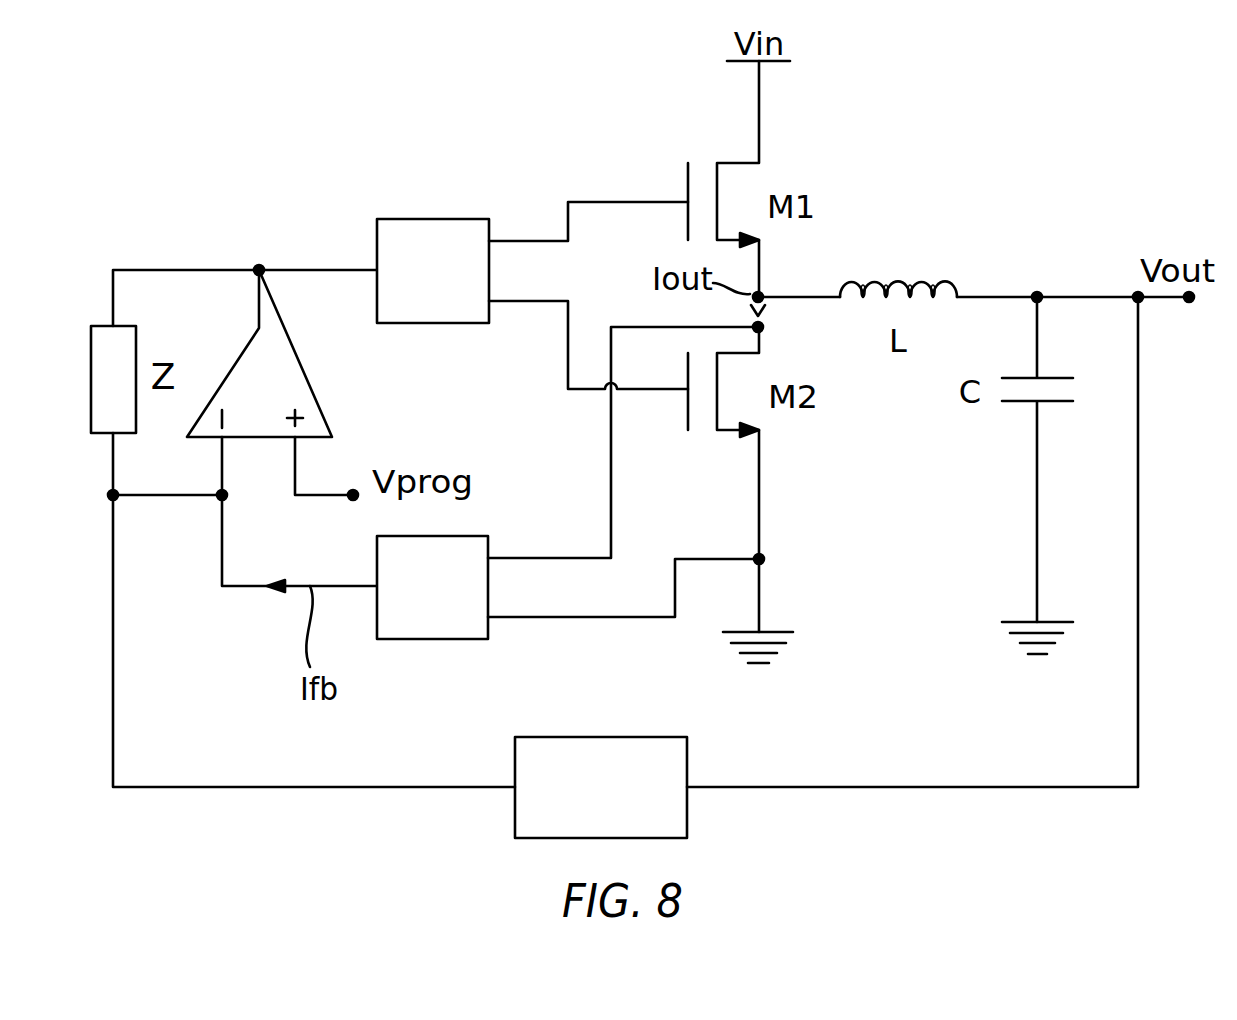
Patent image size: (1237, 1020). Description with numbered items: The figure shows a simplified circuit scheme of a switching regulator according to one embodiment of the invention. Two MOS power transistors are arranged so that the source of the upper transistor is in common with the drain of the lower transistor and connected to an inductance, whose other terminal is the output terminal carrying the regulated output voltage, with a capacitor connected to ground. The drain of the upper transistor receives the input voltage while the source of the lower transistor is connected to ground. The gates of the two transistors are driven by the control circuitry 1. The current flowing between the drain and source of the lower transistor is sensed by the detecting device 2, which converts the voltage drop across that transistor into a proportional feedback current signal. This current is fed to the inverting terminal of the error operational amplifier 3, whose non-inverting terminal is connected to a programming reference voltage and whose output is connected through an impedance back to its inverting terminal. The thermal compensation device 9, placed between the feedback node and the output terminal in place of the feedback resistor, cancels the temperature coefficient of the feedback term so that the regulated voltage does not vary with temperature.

The control circuitry 1 is at (473, 219).
The detecting device 2 is at (472, 536).
The error operational amplifier 3 is at (277, 373).
The thermal compensation device 9 is at (585, 737).